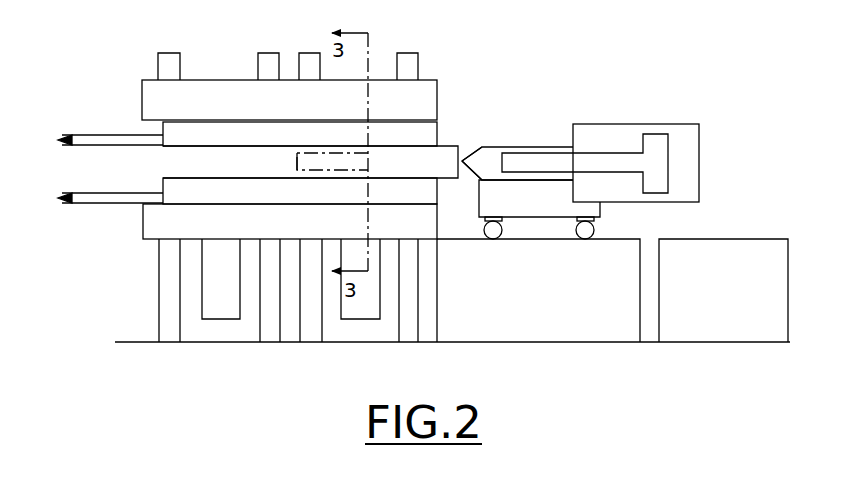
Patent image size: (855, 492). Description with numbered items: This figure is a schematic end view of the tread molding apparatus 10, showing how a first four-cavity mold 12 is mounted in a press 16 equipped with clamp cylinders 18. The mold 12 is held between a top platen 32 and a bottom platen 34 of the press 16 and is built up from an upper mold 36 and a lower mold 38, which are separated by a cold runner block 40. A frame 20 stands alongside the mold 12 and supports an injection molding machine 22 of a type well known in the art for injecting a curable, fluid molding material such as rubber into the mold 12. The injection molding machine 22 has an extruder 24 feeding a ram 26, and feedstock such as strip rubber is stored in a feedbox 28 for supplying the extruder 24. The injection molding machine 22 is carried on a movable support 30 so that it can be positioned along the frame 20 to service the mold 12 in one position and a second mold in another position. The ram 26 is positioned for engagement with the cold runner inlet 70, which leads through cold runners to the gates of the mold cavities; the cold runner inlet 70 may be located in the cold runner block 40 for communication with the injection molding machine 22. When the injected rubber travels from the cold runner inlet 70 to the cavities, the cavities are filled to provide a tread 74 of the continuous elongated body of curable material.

The tread molding apparatus 10 is at (609, 70).
The first four-cavity mold 12 is at (432, 135).
The press 16 is at (199, 333).
The clamp cylinders 18 is at (220, 310).
The frame 20 is at (600, 333).
The injection molding machines 22 is at (687, 138).
The extruders 24 is at (607, 162).
The rams 26 is at (487, 148).
The feedbox 28 is at (732, 332).
The movable support 30 is at (548, 206).
The top platen 32 is at (142, 102).
The bottom platen 34 is at (143, 223).
The upper mold 36 is at (162, 132).
The lower mold 38 is at (170, 188).
The cold runner block 40 is at (168, 163).
The cold runner inlet 70 is at (463, 164).
The tread 74 is at (73, 137).